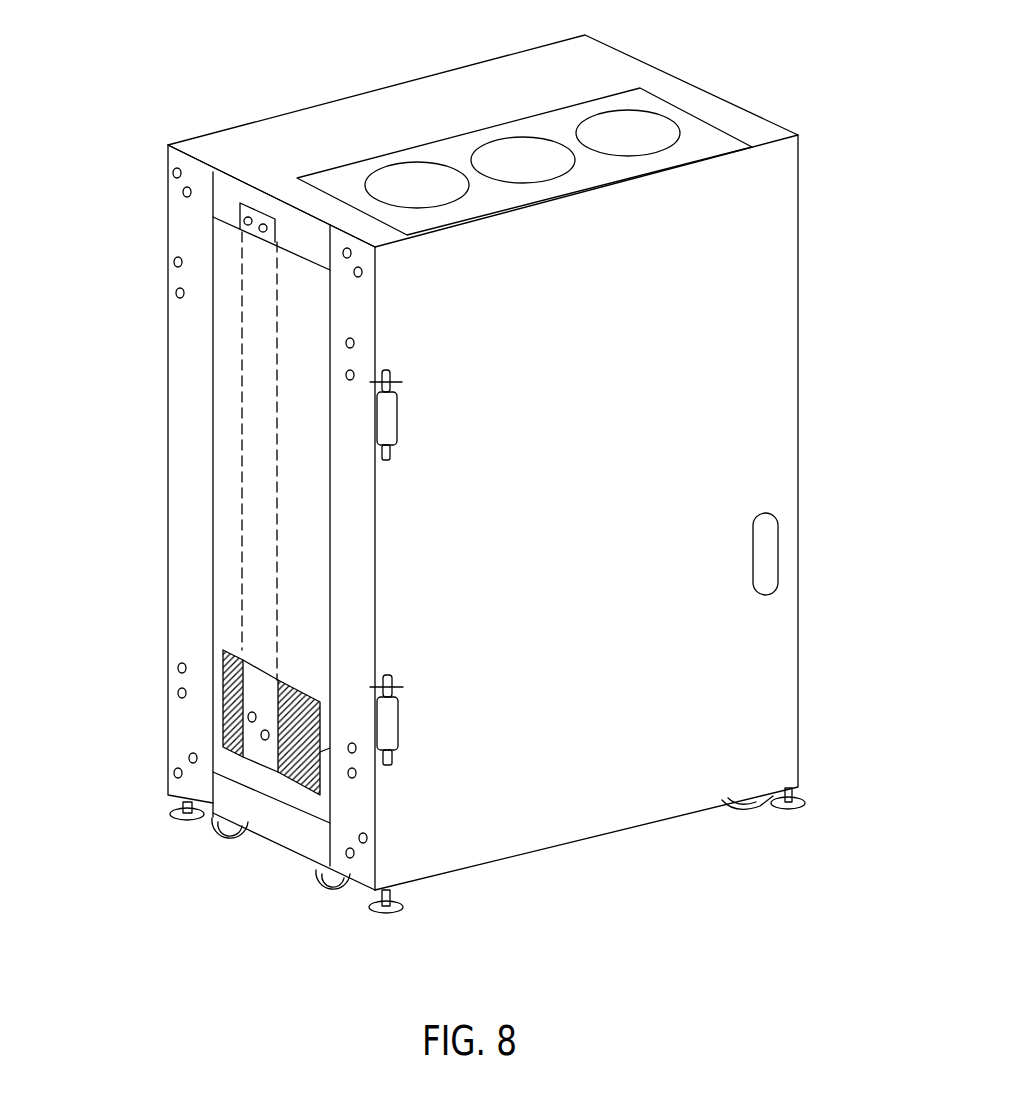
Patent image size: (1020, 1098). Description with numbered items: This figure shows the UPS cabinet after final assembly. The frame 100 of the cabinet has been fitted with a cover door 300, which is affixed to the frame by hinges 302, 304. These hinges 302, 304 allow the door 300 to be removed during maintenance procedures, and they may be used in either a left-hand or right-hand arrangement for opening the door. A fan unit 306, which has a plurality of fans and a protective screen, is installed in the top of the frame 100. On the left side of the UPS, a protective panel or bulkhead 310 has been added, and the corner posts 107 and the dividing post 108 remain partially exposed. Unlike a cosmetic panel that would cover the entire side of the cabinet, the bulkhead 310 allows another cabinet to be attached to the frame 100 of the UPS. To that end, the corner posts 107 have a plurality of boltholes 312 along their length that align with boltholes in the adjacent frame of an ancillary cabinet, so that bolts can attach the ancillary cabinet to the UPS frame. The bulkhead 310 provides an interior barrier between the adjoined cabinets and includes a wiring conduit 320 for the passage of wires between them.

The frame 100 is at (248, 75).
The corner posts 107 is at (198, 558).
The dividing post 108 is at (253, 687).
The cover door 300 is at (765, 443).
The hinge 302 is at (397, 718).
The hinge 304 is at (395, 415).
The fan unit 306 is at (672, 120).
The bulkhead 310 is at (238, 408).
The boltholes 312 is at (160, 275).
The wiring conduit 320 is at (228, 755).